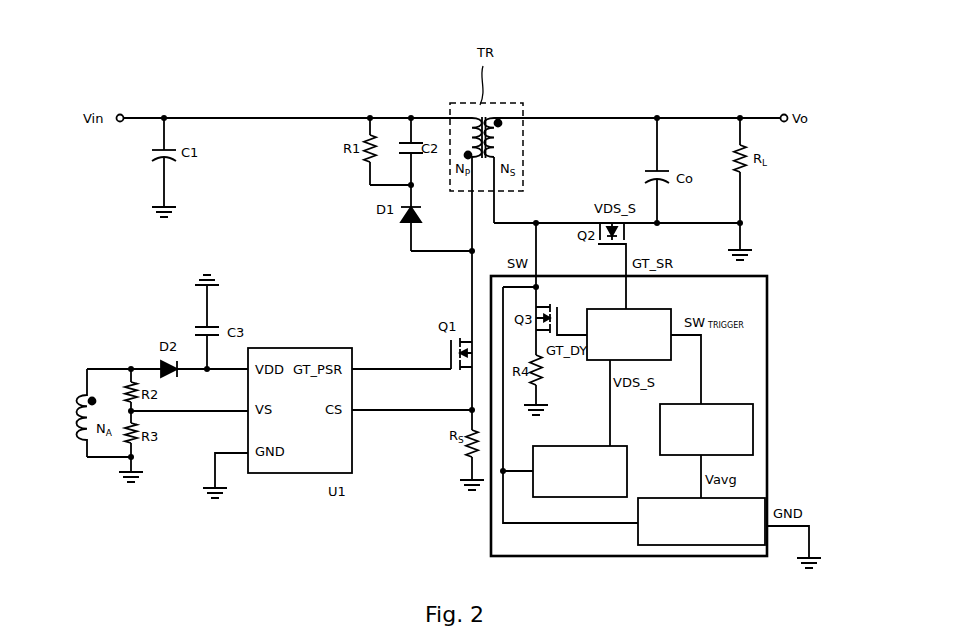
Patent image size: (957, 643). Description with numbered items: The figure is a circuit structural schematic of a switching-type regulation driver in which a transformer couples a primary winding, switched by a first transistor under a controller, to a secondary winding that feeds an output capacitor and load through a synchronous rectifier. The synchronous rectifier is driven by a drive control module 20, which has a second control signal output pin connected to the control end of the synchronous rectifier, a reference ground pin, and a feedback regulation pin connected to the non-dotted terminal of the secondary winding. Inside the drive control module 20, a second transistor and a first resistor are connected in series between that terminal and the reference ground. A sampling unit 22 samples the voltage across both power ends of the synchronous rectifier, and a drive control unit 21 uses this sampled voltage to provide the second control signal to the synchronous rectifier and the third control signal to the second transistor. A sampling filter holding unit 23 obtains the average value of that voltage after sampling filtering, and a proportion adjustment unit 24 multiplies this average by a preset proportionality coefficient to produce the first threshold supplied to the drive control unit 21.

The drive control module 20 is at (757, 407).
The drive control unit 21 is at (629, 334).
The sampling unit 22 is at (580, 471).
The sampling filter holding unit 23 is at (701, 521).
The proportion adjustment unit 24 is at (706, 429).